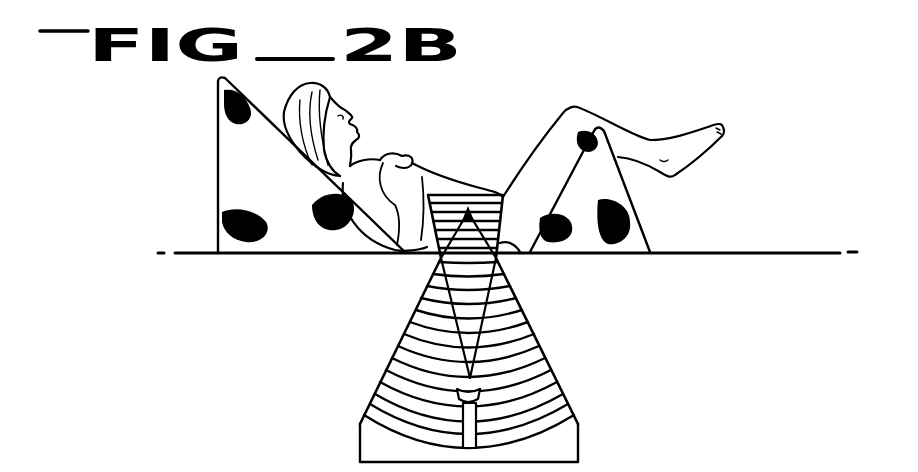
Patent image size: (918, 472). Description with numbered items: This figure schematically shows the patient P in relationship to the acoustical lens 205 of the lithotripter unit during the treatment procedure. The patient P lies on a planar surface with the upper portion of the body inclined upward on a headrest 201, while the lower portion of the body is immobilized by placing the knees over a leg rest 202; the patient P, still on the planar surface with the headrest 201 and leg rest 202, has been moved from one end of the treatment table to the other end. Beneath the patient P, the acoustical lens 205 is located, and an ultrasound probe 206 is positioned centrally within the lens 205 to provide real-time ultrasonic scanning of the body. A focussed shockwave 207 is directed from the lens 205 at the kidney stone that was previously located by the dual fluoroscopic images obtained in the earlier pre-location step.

The headrest 201 is at (308, 235).
The leg rest 202 is at (583, 232).
The acoustical lens 205 is at (568, 447).
The ultrasound probe 206 is at (463, 413).
The focussed shockwave 207 is at (412, 321).
The patient P is at (569, 118).